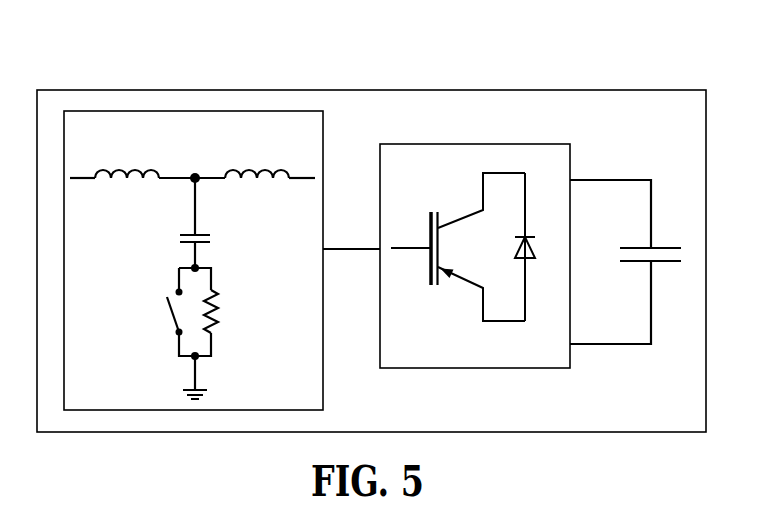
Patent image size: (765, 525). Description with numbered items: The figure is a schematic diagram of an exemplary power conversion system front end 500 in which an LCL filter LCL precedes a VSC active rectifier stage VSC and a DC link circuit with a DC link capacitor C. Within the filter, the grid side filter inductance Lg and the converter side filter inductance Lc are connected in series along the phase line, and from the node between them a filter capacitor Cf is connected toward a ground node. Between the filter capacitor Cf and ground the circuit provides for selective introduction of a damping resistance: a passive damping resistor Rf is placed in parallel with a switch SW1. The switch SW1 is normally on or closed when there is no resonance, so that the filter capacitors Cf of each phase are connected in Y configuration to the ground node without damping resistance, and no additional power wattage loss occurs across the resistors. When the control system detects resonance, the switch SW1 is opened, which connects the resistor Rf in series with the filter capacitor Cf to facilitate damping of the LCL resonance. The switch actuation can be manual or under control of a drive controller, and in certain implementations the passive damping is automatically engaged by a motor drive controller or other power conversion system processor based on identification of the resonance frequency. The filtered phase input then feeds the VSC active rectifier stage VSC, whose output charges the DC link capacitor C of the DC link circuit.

The power conversion system front end 500 is at (66, 37).
The LCL filter LCL is at (193, 260).
The grid side filter inductance Lg is at (127, 160).
The converter side filter inductance Lc is at (257, 160).
The filter capacitor Cf is at (210, 244).
The switch SW1 is at (157, 312).
The passive damping resistor Rf is at (226, 311).
The voltage source converter active rectifier stage VSC is at (475, 256).
The DC link capacitor C is at (625, 262).